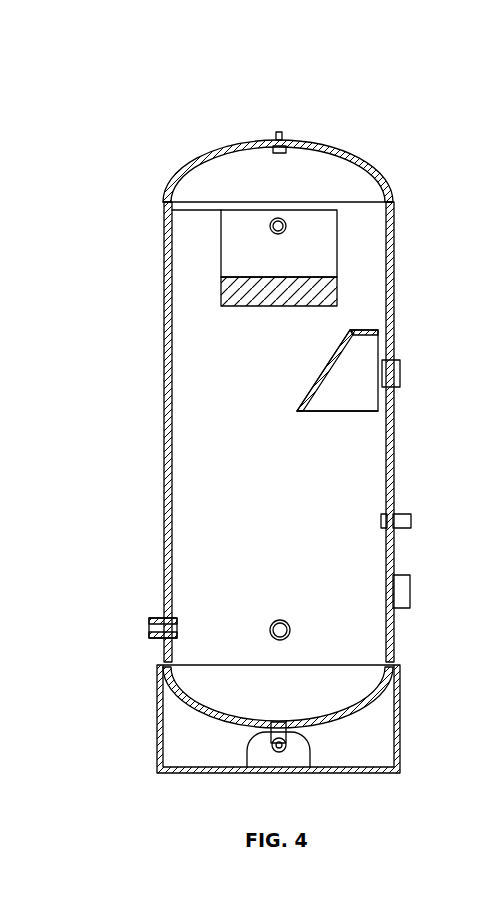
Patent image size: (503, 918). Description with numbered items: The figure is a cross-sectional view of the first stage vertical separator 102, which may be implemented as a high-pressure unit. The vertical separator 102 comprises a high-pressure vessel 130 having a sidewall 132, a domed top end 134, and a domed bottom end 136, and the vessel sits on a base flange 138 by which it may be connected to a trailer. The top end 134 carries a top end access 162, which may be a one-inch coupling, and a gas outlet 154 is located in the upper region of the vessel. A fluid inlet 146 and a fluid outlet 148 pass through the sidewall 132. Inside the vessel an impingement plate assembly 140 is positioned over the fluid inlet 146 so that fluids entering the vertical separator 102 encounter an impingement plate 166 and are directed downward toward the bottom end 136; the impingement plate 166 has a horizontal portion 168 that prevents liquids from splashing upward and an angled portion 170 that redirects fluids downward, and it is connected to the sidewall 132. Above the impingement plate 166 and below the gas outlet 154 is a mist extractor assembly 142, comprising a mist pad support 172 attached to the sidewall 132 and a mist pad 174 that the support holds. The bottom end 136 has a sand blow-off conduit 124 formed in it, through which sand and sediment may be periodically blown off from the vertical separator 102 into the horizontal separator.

The vertical separator 102 is at (140, 81).
The sand blow-off conduit 124 is at (270, 752).
The high-pressure vessel 130 is at (396, 438).
The sidewall 132 is at (395, 467).
The top end 134 is at (196, 161).
The bottom end 136 is at (180, 696).
The base flange 138 is at (404, 715).
The impingement plate assembly 140 is at (323, 362).
The mist extractor assembly 142 is at (208, 258).
The fluid inlet 146 is at (400, 380).
The fluid outlet 148 is at (411, 516).
The gas outlet 154 is at (275, 218).
The top end access 162 is at (280, 131).
The impingement plate 166 is at (313, 385).
The horizontal portion 168 is at (370, 330).
The angled portion 170 is at (313, 400).
The mist pad support 172 is at (337, 226).
The mist pad 174 is at (337, 290).